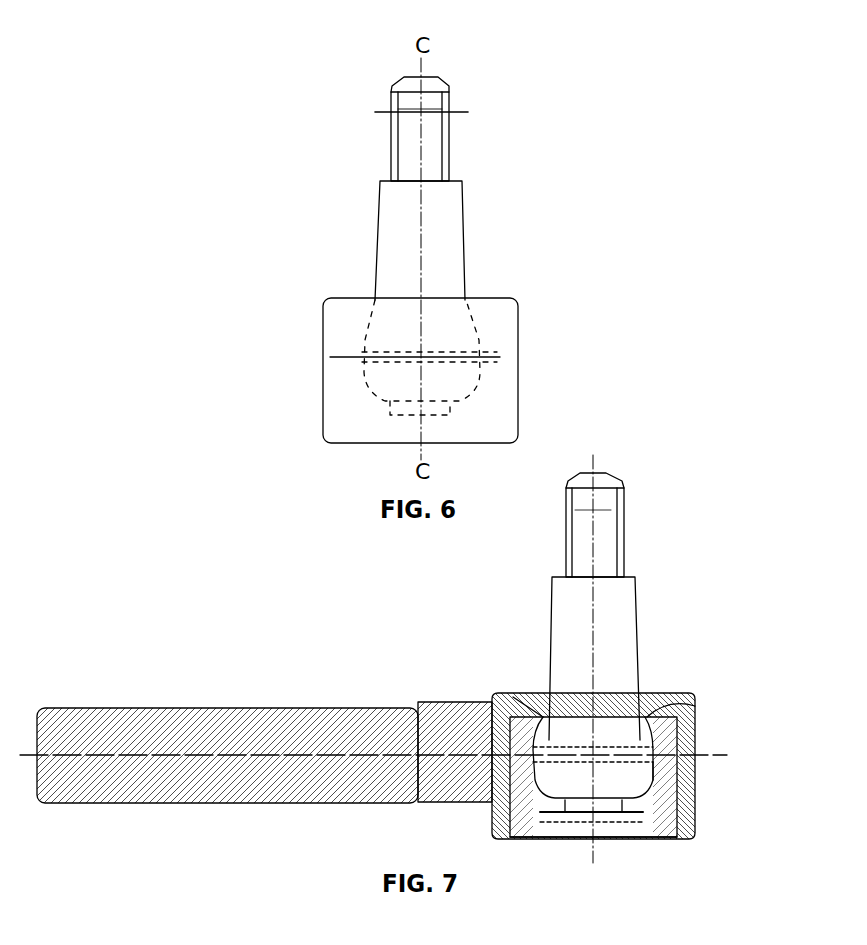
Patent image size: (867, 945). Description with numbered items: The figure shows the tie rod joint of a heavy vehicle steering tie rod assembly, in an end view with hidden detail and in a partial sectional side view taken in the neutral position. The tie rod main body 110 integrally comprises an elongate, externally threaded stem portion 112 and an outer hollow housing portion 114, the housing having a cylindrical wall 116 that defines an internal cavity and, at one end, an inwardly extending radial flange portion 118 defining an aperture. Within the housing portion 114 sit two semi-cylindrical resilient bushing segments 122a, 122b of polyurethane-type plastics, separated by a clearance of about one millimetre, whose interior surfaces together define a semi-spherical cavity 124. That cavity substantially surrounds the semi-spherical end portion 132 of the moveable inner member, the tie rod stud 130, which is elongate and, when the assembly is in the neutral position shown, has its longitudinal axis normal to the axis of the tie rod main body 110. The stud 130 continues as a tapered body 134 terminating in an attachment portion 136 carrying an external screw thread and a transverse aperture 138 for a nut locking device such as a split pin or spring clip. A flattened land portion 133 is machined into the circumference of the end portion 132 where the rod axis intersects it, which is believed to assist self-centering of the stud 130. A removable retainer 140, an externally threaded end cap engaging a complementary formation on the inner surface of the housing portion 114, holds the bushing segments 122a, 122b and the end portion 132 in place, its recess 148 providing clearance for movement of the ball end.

In FIG. 6, the tie rod main body 110 is at (577, 312).
In FIG. 7, the tie rod main body 110 is at (303, 642).
In FIG. 7, the stem portion 112 is at (155, 730).
In FIG. 6, the housing portion 114 is at (345, 318).
In FIG. 7, the housing portion 114 is at (690, 772).
In FIG. 7, the cylindrical wall 116 is at (685, 835).
In FIG. 7, the radial flange portion 118 is at (685, 697).
In FIG. 7, the bushing segment 122a is at (528, 777).
In FIG. 7, the bushing segment 122b is at (665, 740).
In FIG. 7, the semi-spherical cavity 124 is at (643, 777).
In FIG. 6, the tie rod stud 130 is at (496, 47).
In FIG. 7, the tie rod stud 130 is at (604, 447).
In FIG. 7, the semi-spherical end portion 132 is at (567, 735).
In FIG. 6, the flattened land portion 133 is at (330, 357).
In FIG. 6, the tapered body 134 is at (443, 240).
In FIG. 7, the tapered body 134 is at (613, 642).
In FIG. 6, the attachment portion 136 is at (410, 143).
In FIG. 7, the attachment portion 136 is at (603, 530).
In FIG. 6, the transverse aperture 138 is at (378, 112).
In FIG. 7, the retainer 140 is at (525, 833).
In FIG. 7, the recess 148 is at (635, 805).